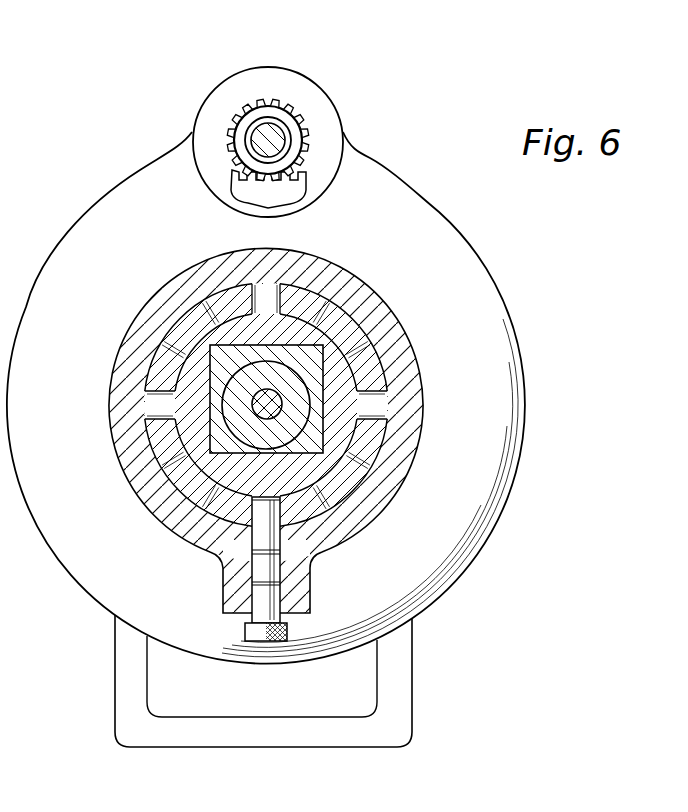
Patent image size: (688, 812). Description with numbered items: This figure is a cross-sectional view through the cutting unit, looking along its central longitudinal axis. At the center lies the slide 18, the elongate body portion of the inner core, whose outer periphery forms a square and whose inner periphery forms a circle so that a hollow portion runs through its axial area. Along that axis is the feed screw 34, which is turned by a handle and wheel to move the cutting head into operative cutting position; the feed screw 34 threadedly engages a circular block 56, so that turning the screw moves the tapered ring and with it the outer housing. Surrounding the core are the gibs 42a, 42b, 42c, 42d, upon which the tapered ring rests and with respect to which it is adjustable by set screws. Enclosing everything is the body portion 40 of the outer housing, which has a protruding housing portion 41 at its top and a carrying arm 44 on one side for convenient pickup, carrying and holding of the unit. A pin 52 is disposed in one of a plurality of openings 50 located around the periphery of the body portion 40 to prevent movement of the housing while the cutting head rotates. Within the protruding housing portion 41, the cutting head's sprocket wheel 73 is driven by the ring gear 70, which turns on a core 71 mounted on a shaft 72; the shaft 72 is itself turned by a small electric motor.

The slide 18 is at (310, 438).
The feed screw 34 is at (268, 398).
The body portion 40 is at (490, 508).
The protruding housing portion 41 is at (243, 67).
The gib 42a is at (287, 320).
The gib 42b is at (187, 380).
The gib 42c is at (185, 500).
The gib 42d is at (395, 370).
The carrying arm 44 is at (295, 735).
The openings 50 is at (172, 343).
The pin 52 is at (258, 600).
The circular block 56 is at (312, 420).
The ring gear 70 is at (262, 103).
The core 71 is at (295, 108).
The shaft 72 is at (307, 125).
The sprocket wheel 73 is at (298, 196).